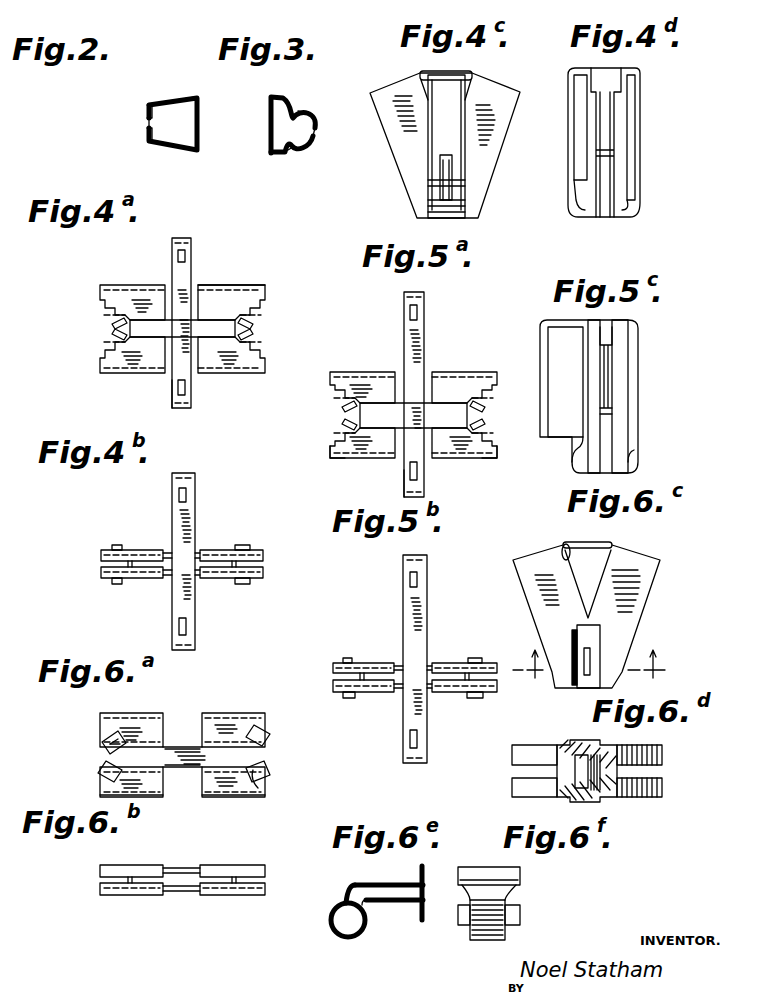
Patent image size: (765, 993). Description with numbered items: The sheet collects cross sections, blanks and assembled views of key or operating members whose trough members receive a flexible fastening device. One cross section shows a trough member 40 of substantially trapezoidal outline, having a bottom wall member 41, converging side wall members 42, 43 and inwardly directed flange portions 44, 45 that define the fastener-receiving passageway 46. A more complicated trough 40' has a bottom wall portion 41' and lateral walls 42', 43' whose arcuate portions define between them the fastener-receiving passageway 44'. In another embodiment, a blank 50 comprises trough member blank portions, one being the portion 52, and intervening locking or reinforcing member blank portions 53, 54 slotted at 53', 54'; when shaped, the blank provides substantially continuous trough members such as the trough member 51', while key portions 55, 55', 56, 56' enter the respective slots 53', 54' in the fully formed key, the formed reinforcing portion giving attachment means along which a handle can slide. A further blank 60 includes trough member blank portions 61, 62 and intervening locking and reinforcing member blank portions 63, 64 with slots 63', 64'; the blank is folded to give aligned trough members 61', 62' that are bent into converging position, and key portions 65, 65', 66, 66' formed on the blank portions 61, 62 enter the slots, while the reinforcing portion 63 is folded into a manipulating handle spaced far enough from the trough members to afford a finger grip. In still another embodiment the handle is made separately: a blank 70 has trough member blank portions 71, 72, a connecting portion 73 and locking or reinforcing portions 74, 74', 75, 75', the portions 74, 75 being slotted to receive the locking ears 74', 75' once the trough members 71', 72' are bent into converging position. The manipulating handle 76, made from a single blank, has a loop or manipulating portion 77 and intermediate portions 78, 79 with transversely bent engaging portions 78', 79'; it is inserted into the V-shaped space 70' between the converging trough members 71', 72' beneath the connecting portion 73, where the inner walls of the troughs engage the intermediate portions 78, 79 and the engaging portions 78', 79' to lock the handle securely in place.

In FIG. 2, the trough member 40 is at (191, 124).
In FIG. 2, the bottom wall member 41 is at (214, 129).
In FIG. 2, the converging side wall member 42 is at (182, 160).
In FIG. 2, the converging side wall member 43 is at (173, 90).
In FIG. 2, the inwardly directed flange portion 44 is at (144, 158).
In FIG. 2, the inwardly directed flange portion 45 is at (146, 112).
In FIG. 2, the fastener-receiving passageway 46 is at (146, 124).
In FIG. 3, the trough 40' is at (273, 144).
In FIG. 3, the bottom wall portion 41' is at (281, 171).
In FIG. 3, the lateral wall 42' is at (314, 169).
In FIG. 3, the lateral wall 43' is at (302, 94).
In FIG. 3, the fastener-receiving passageway 44' is at (334, 130).
In FIG. 4A, the blank 50 is at (239, 291).
In FIG. 4B, the trough member 51' is at (148, 561).
In FIG. 4A, the trough member blank portion 52 is at (251, 287).
In FIG. 4A, the locking or reinforcing member blank portion 53 is at (164, 323).
In FIG. 4A, the slot 53' is at (203, 255).
In FIG. 4A, the locking or reinforcing member blank portion 54 is at (152, 394).
In FIG. 4A, the slot 54' is at (203, 393).
In FIG. 4B, the key portion 55 is at (109, 538).
In FIG. 4B, the key portion 55' is at (261, 538).
In FIG. 4B, the key portion 56 is at (110, 594).
In FIG. 4B, the key portion 56' is at (252, 595).
In FIG. 5A, the blank 60 is at (440, 372).
In FIG. 5A, the trough member blank portion 61 is at (336, 464).
In FIG. 5B, the trough member 61' is at (380, 659).
In FIG. 5A, the trough member blank portion 62 is at (487, 467).
In FIG. 5B, the trough member 62' is at (462, 662).
In FIG. 5A, the locking and reinforcing member blank portion 63 is at (394, 394).
In FIG. 5A, the slot 63' is at (393, 313).
In FIG. 5A, the locking and reinforcing member blank portion 64 is at (386, 483).
In FIG. 5A, the slot 64' is at (443, 481).
In FIG. 5B, the key portion 65 is at (348, 650).
In FIG. 5B, the key portion 65' is at (485, 650).
In FIG. 5B, the key portion 66 is at (344, 712).
In FIG. 5B, the key portion 66' is at (469, 716).
In FIG. 6A, the blank 70 is at (182, 742).
In FIG. 6C, the V-shaped space 70' is at (589, 607).
In FIG. 6A, the trough member blank portion 71 is at (134, 816).
In FIG. 6B, the trough member 71' is at (136, 870).
In FIG. 6A, the trough member blank portion 72 is at (233, 814).
In FIG. 6B, the trough member 72' is at (235, 870).
In FIG. 6C, the connecting portion 73 is at (600, 548).
In FIG. 6D, the connecting portion 73 is at (587, 771).
In FIG. 6A, the connecting portion 73 is at (190, 768).
In FIG. 6B, the connecting portion 73 is at (186, 896).
In FIG. 6A, the locking or reinforcing portion 74 is at (94, 734).
In FIG. 6A, the locking ear 74' is at (91, 771).
In FIG. 6A, the locking or reinforcing portion 75 is at (274, 771).
In FIG. 6A, the locking ear 75' is at (276, 735).
In FIG. 6E, the manipulating handle 76 is at (390, 905).
In FIG. 6E, the loop or manipulating portion 77 is at (336, 934).
In FIG. 6F, the loop or manipulating portion 77 is at (485, 942).
In FIG. 6E, the intermediate portion 78 is at (391, 873).
In FIG. 6E, the transversely bent engaging portion 78' is at (437, 874).
In FIG. 6F, the transversely bent engaging portion 78' is at (510, 883).
In FIG. 6E, the intermediate portion 79 is at (367, 940).
In FIG. 6E, the transversely bent engaging portion 79' is at (435, 923).
In FIG. 6F, the transversely bent engaging portion 79' is at (510, 915).